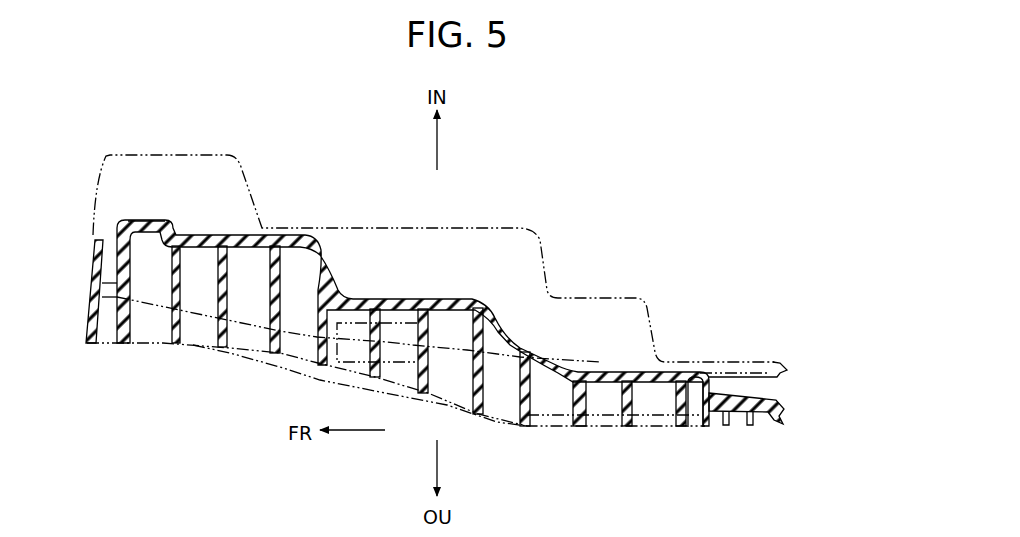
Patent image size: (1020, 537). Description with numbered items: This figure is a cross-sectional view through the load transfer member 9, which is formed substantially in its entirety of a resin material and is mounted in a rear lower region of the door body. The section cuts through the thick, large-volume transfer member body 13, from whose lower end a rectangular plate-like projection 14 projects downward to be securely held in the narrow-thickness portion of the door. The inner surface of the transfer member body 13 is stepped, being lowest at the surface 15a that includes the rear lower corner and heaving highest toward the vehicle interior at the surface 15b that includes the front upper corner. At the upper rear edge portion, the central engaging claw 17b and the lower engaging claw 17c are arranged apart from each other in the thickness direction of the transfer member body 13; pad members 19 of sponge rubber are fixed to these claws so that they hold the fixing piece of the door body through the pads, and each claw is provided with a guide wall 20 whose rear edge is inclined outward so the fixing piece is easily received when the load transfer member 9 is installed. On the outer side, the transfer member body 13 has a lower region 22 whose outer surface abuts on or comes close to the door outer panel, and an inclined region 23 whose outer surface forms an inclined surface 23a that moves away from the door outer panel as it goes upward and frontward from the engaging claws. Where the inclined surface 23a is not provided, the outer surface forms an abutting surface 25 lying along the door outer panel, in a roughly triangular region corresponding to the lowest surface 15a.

The load transfer member 9 is at (403, 315).
The transfer member body 13 is at (500, 226).
The projection 14 is at (400, 355).
The surface 15a is at (646, 379).
The surface 15b is at (262, 228).
The engaging claw 17b is at (720, 373).
The engaging claw 17c is at (728, 427).
The pad member 19 is at (782, 377).
The guide wall 20 is at (760, 363).
The lower region 22 is at (217, 360).
The inclined region 23 is at (396, 403).
The inclined surface 23a is at (190, 353).
The abutting surface 25 is at (627, 427).